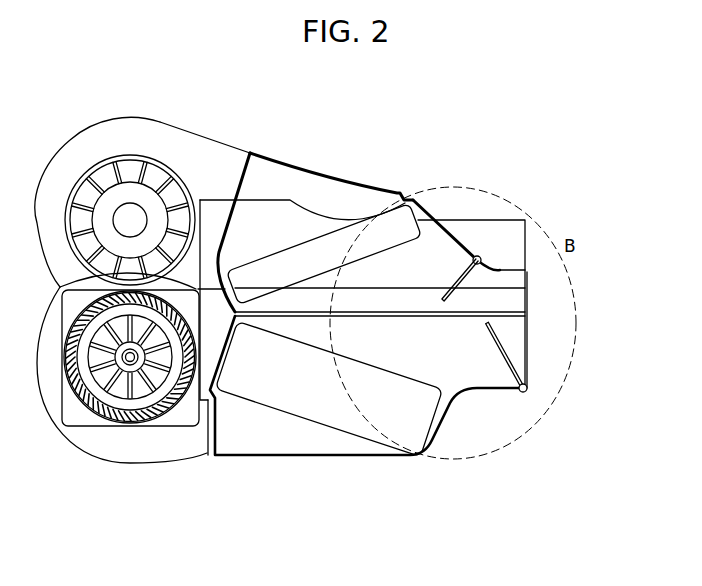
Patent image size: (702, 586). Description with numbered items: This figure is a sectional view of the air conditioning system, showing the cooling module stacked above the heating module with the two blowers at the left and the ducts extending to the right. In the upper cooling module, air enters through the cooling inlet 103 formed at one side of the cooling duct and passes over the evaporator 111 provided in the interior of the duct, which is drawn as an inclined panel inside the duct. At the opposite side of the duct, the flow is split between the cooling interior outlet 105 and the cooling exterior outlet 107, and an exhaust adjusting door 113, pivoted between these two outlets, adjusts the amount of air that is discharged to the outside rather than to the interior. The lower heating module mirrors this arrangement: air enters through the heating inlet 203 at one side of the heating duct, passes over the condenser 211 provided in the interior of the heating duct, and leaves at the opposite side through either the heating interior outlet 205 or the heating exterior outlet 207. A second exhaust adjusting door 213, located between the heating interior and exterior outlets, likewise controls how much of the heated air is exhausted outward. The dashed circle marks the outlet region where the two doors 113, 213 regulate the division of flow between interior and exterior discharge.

The cooling inlet 103 is at (232, 168).
The cooling interior outlet 105 is at (505, 297).
The cooling exterior outlet 107 is at (432, 230).
The evaporator 111 is at (408, 195).
The exhaust adjusting door 113 is at (466, 255).
The heating inlet 203 is at (192, 440).
The heating interior outlet 205 is at (510, 327).
The heating exterior outlet 207 is at (480, 380).
The condenser 211 is at (416, 440).
The exhaust adjusting door 213 is at (508, 353).